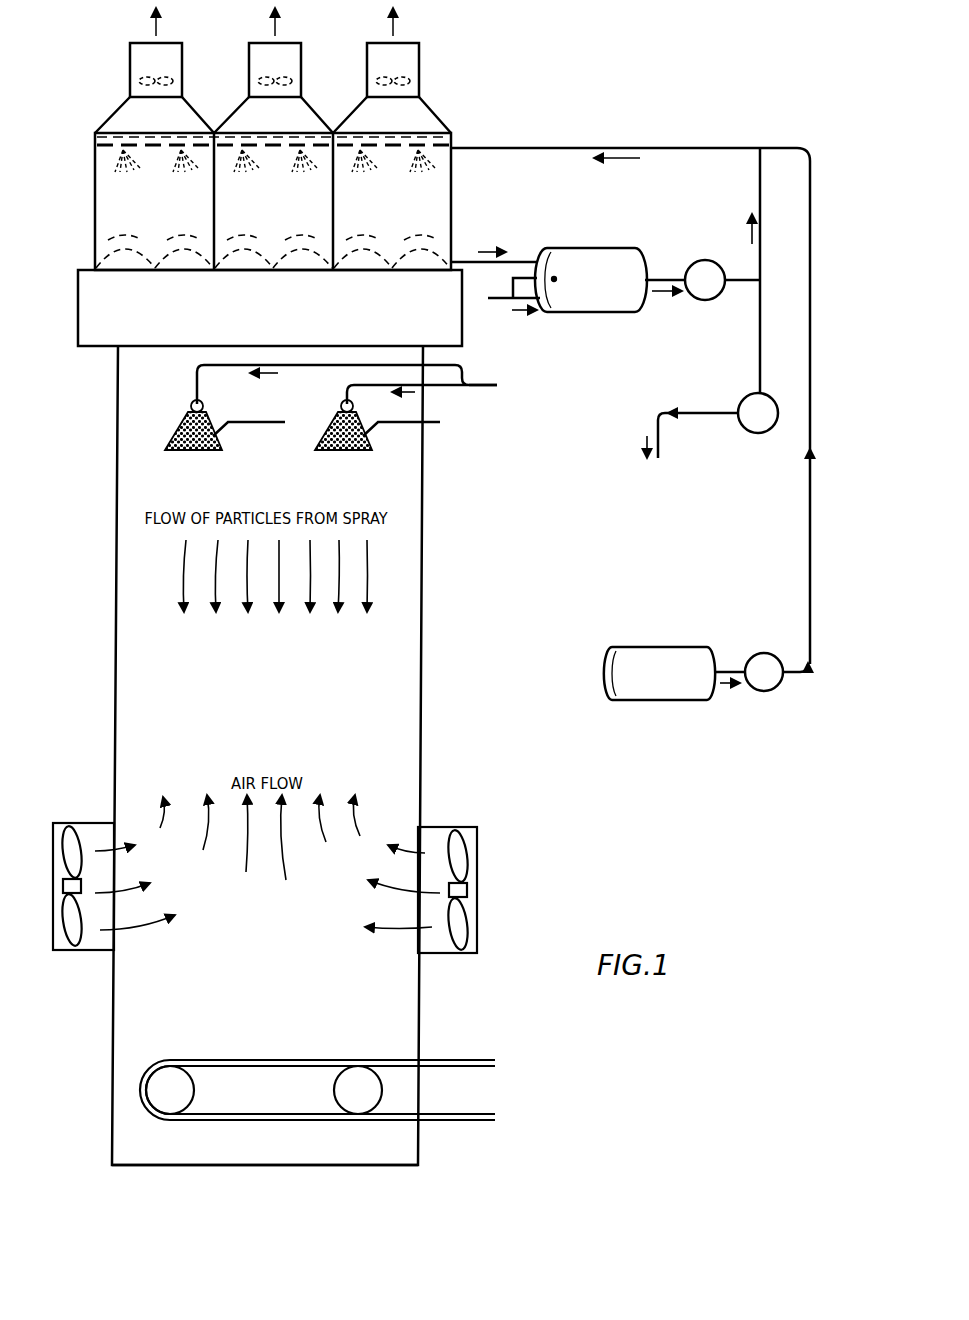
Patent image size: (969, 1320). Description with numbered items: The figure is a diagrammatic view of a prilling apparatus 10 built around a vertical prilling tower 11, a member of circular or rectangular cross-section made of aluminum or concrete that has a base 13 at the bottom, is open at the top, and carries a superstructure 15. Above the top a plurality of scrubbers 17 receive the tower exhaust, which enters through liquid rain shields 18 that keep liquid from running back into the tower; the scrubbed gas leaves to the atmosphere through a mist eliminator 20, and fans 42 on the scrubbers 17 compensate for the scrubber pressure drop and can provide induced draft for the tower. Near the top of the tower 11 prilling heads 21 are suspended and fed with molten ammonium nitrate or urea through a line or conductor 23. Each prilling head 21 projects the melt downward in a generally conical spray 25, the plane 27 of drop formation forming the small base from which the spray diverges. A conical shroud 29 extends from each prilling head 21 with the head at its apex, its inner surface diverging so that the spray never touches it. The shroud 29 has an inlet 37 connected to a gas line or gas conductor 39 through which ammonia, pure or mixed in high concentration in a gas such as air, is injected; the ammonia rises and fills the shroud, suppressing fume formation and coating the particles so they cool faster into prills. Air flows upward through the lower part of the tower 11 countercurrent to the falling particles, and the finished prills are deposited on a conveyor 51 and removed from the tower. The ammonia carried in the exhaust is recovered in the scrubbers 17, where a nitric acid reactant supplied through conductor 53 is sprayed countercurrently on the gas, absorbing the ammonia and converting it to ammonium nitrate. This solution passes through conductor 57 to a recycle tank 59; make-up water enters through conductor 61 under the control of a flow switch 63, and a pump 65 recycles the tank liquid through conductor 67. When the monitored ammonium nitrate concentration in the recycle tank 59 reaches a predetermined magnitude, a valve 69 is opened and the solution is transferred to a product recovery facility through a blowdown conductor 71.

The apparatus 10 is at (490, 739).
The prilling tower 11 is at (437, 660).
The base 13 is at (112, 1140).
The superstructure 15 is at (93, 335).
The scrubbers 17 is at (442, 112).
The liquid rain shields 18 is at (228, 242).
The mist eliminator 20 is at (172, 142).
The prilling heads 21 is at (194, 408).
The line or conductor 23 is at (487, 389).
The spray 25 is at (178, 432).
The plane of drop formation 27 is at (210, 420).
The conical shroud 29 is at (198, 450).
The inlet 37 is at (224, 433).
The gas line or gas conductor 39 is at (262, 422).
The fans 42 is at (478, 834).
The conveyor 51 is at (445, 1058).
The conductor 53 is at (808, 539).
The conductor 57 is at (468, 258).
The recycle tank 59 is at (607, 314).
The conductor 61 is at (494, 306).
The flow switch 63 is at (550, 272).
The pump 65 is at (705, 260).
The conductor 67 is at (760, 174).
The valve 69 is at (748, 397).
The blowdown conductor 71 is at (659, 448).